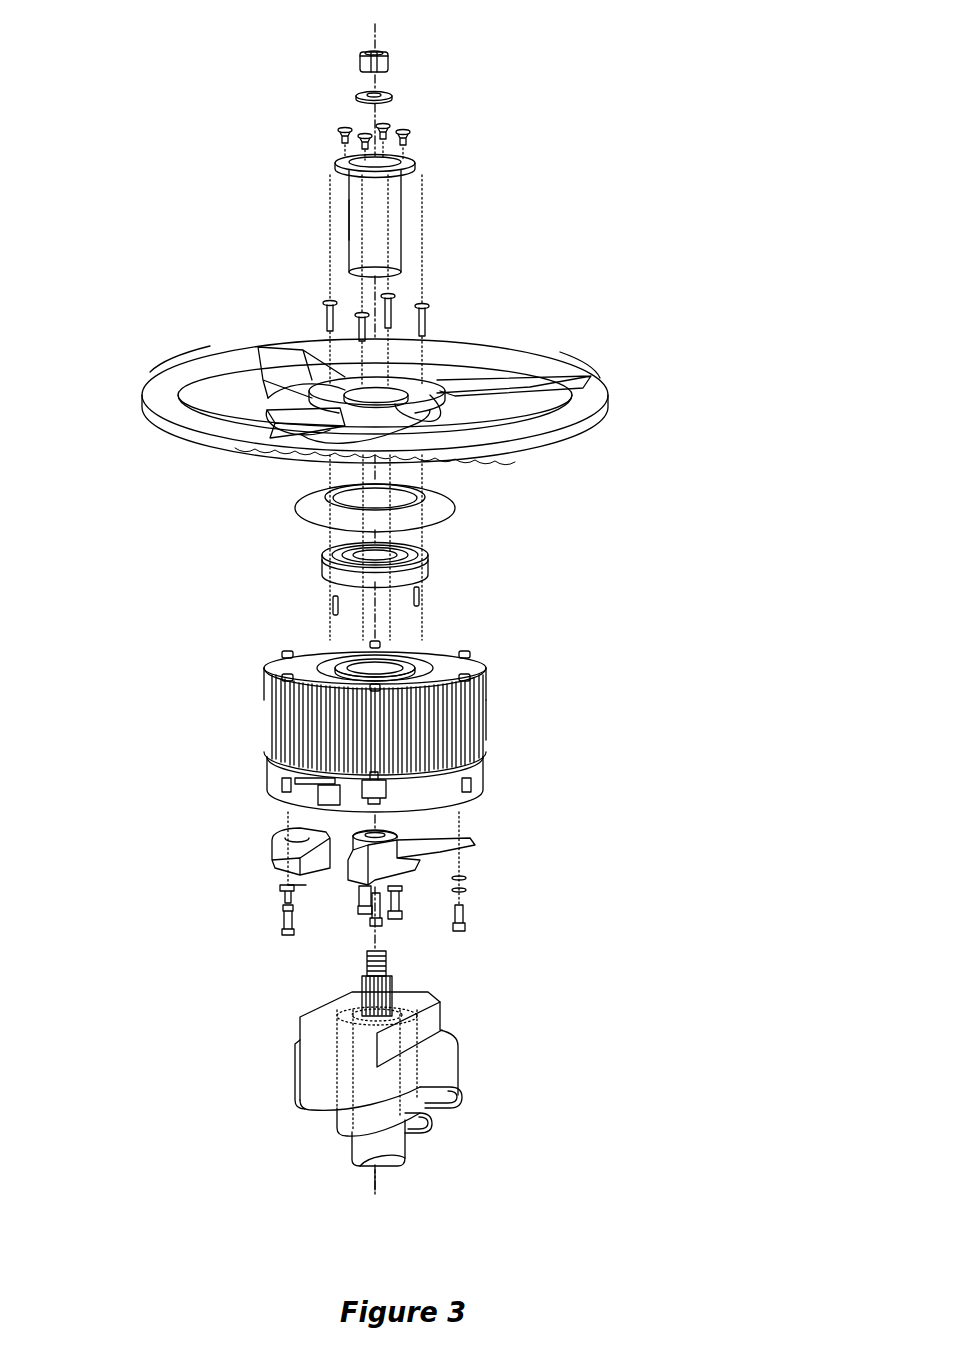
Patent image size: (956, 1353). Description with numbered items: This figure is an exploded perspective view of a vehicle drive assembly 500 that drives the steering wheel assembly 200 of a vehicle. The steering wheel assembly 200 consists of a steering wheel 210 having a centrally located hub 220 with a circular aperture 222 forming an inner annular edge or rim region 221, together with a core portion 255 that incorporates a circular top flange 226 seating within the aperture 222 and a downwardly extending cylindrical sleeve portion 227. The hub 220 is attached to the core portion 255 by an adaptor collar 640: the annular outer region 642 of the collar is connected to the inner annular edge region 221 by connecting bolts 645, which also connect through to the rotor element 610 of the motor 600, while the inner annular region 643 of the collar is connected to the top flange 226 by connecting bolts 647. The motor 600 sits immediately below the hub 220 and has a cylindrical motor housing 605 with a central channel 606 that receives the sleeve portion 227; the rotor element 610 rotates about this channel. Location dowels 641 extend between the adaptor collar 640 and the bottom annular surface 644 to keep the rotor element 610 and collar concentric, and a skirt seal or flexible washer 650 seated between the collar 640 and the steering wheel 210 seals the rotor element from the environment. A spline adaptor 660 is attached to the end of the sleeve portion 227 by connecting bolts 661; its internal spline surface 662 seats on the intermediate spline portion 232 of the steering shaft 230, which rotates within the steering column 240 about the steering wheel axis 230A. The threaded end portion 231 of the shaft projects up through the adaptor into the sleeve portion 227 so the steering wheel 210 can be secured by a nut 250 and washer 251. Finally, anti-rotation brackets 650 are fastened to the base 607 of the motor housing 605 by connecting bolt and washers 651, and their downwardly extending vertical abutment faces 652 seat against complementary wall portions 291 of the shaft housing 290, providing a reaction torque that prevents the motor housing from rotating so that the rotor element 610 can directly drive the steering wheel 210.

The steering wheel assembly 200 is at (620, 376).
The steering wheel 210 is at (180, 372).
The hub 220 is at (440, 388).
The inner annular edge region 221 is at (326, 402).
The aperture 222 is at (362, 393).
The top flange 226 is at (340, 168).
The cylindrical sleeve portion 227 is at (364, 232).
The steering shaft 230 is at (365, 1152).
The steering wheel axis 230A is at (416, 618).
The threaded end portion 231 is at (392, 962).
The intermediate spline portion 232 is at (386, 984).
The steering column 240 is at (410, 1112).
The nut 250 is at (388, 62).
The washer 251 is at (392, 96).
The core portion 255 is at (428, 229).
The shaft housing 290 is at (313, 1084).
The wall portions 291 is at (425, 1025).
The drive assembly 500 is at (537, 708).
The motor 600 is at (268, 720).
The motor housing 605 is at (265, 735).
The channel 606 is at (390, 664).
The base 607 is at (448, 811).
The rotor element 610 is at (342, 660).
The adaptor collar 640 is at (325, 568).
The location dowels 641 is at (333, 610).
The annular outer region 642 is at (332, 553).
The inner annular region 643 is at (415, 549).
The bottom annular surface 644 is at (415, 577).
The connecting bolts 645 is at (326, 312).
The connecting bolts 647 is at (340, 134).
The skirt seal / anti-rotation brackets 650 is at (440, 502).
The connecting bolt and washers 651 is at (282, 912).
The vertical abutment faces 652 is at (325, 865).
The spline adaptor 660 is at (360, 905).
The connecting bolts 661 is at (373, 892).
The internal spline surface 662 is at (400, 830).